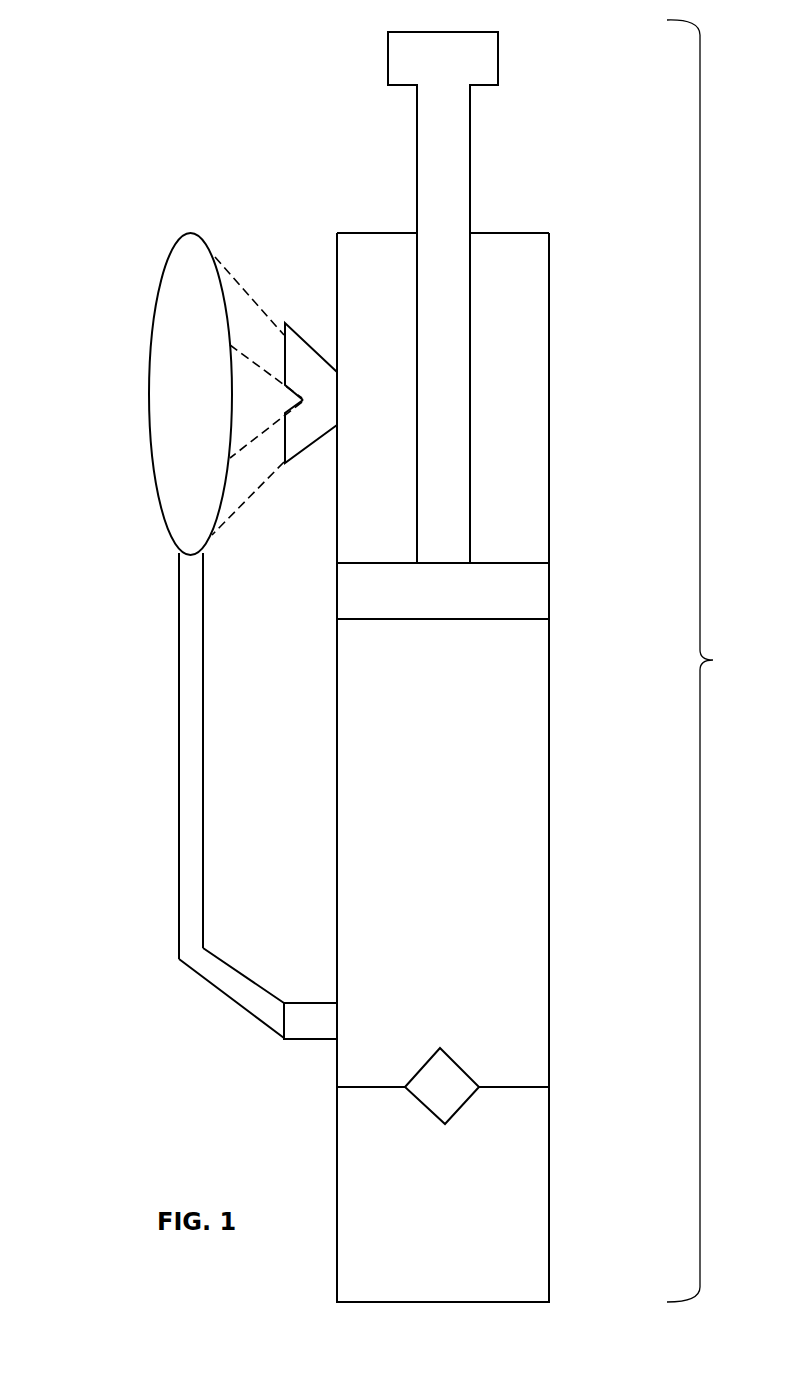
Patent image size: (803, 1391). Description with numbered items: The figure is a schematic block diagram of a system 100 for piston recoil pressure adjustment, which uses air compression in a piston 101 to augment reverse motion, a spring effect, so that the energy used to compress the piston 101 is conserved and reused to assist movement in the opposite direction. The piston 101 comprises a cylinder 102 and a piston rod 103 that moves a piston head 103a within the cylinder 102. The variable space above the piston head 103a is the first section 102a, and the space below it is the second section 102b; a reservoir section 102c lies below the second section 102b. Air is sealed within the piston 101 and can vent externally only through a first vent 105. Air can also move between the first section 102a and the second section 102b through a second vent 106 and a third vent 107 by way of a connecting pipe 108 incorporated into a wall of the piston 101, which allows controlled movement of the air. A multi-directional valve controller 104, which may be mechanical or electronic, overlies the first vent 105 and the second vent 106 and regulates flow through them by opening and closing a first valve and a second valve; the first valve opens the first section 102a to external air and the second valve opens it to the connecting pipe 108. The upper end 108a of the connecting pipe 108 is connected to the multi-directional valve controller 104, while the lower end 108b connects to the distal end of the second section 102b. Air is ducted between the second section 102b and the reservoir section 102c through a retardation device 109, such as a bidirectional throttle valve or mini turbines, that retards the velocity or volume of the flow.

The system for piston recoil pressure adjustment 100 is at (212, 50).
The piston 101 is at (713, 660).
The cylinder 102 is at (552, 256).
The first section 102a is at (521, 380).
The second section 102b is at (523, 750).
The reservoir section 102c is at (517, 1186).
The piston rod 103 is at (471, 135).
The piston head 103a is at (523, 592).
The multi-directional valve controller 104 is at (191, 231).
The first vent 105 is at (281, 337).
The second vent 106 is at (285, 456).
The third vent 107 is at (299, 1041).
The connecting pipe 108 is at (177, 796).
The upper end of the connecting pipe 108a is at (176, 571).
The lower end of the connecting pipe 108b is at (239, 1004).
The retardation device 109 is at (460, 1061).